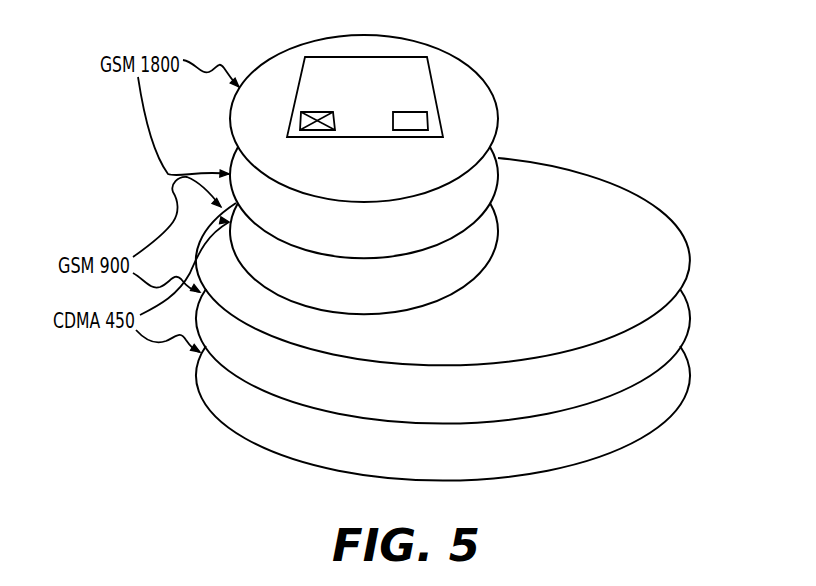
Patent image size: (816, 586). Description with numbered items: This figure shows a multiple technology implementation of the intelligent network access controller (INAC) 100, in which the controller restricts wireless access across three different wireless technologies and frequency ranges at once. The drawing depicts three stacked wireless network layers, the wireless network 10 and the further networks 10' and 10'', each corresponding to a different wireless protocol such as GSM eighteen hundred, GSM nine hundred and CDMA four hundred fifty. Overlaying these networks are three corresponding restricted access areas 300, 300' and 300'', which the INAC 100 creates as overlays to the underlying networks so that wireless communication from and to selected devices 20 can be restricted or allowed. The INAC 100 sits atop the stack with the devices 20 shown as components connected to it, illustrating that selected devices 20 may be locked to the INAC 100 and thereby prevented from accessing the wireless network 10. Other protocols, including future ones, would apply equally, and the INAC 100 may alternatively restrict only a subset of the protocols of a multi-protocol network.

The wireless network 10 is at (443, 254).
The wireless network 10' is at (459, 330).
The wireless network 10'' is at (461, 395).
The restricted wireless access area 300 is at (402, 118).
The restricted access area 300' is at (398, 202).
The restricted access area 300'' is at (402, 258).
The intelligent network access controller 100 is at (397, 88).
The device 20 is at (305, 118).